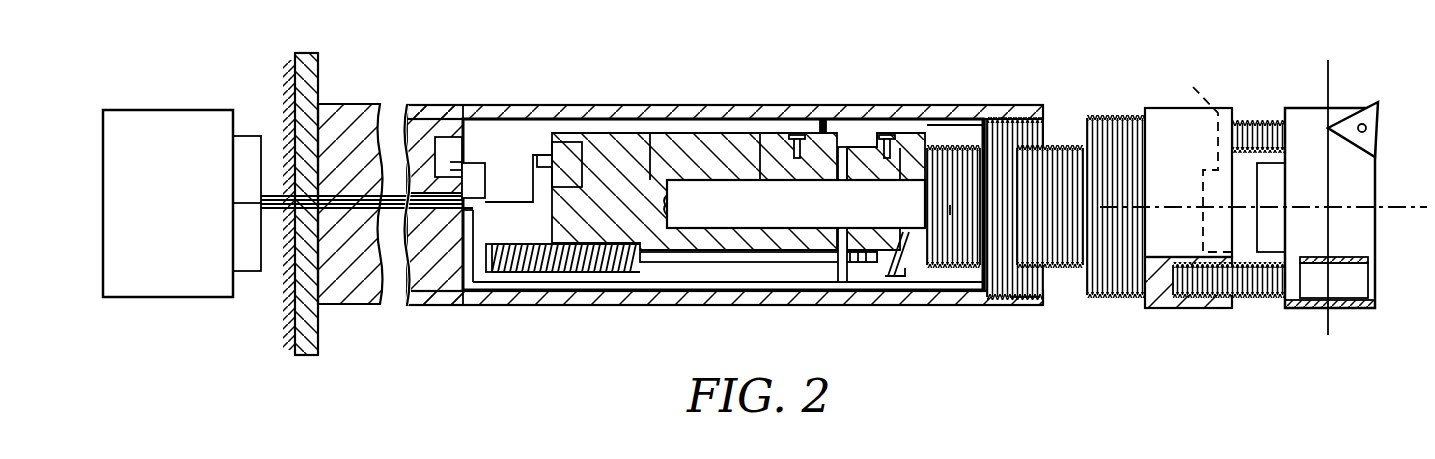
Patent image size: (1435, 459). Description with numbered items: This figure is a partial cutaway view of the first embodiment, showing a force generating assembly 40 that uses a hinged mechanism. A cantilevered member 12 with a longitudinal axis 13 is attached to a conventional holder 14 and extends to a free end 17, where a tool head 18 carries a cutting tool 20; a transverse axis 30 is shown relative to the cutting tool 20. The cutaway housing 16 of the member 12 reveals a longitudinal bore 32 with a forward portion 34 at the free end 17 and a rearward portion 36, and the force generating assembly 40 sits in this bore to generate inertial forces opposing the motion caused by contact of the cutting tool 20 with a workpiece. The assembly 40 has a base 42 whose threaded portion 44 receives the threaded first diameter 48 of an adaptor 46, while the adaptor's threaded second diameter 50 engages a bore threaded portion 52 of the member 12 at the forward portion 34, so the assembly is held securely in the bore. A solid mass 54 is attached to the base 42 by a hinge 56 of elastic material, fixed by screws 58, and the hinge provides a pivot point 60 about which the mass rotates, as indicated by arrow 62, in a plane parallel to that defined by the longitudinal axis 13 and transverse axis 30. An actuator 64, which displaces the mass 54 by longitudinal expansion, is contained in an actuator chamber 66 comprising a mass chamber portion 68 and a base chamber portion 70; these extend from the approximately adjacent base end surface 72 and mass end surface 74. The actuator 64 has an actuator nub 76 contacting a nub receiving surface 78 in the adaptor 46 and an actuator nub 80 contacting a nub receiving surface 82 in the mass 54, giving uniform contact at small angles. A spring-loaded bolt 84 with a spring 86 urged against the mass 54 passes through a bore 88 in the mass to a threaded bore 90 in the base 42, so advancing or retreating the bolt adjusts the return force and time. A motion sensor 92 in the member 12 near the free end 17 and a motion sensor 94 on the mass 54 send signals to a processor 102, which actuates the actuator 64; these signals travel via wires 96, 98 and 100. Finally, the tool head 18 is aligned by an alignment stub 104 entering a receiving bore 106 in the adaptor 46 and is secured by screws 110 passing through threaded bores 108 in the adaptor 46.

The cantilevered member 12 is at (355, 104).
The longitudinal axis 13 is at (1404, 207).
The holder 14 is at (304, 53).
The housing 16 is at (746, 104).
The free end 17 is at (1044, 105).
The tool head 18 is at (1376, 224).
The cutting tool 20 is at (1380, 115).
The transverse axis 30 is at (1335, 320).
The longitudinal bore 32 is at (925, 125).
The forward portion 34 is at (968, 125).
The rearward portion 36 is at (495, 122).
The force generating assembly 40 is at (612, 137).
The base 42 is at (900, 172).
The threaded portion 44 is at (983, 214).
The adaptor 46 is at (1160, 116).
The threaded first diameter 48 is at (1057, 265).
The threaded second diameter 50 is at (1113, 293).
The bore threaded portion 52 is at (1010, 305).
The solid mass 54 is at (650, 147).
The hinge 56 is at (865, 147).
The screws 58 is at (797, 132).
The pivot point 60 is at (842, 147).
The arrow 62 is at (823, 119).
The actuator 64 is at (796, 204).
The actuator chamber 66 is at (720, 262).
The mass chamber portion 68 is at (762, 166).
The base chamber portion 70 is at (935, 215).
The base end surface 72 is at (843, 285).
The mass end surface 74 is at (803, 285).
The actuator nub 76 is at (937, 208).
The nub receiving surface 78 is at (1010, 210).
The actuator nub 80 is at (667, 199).
The nub receiving surface 82 is at (667, 205).
The spring-loaded bolt 84 is at (487, 274).
The spring 86 is at (525, 270).
The bore 88 is at (750, 284).
The threaded bore 90 is at (862, 263).
The motion sensor 92 is at (440, 140).
The motion sensor 94 is at (570, 142).
The wire 96 is at (912, 270).
The wire 98 is at (485, 175).
The wire 100 is at (492, 210).
The processor 102 is at (196, 110).
The alignment stub 104 is at (1270, 191).
The receiving bore 106 is at (1196, 90).
The threaded bores 108 is at (1195, 305).
The screws 110 is at (1263, 290).